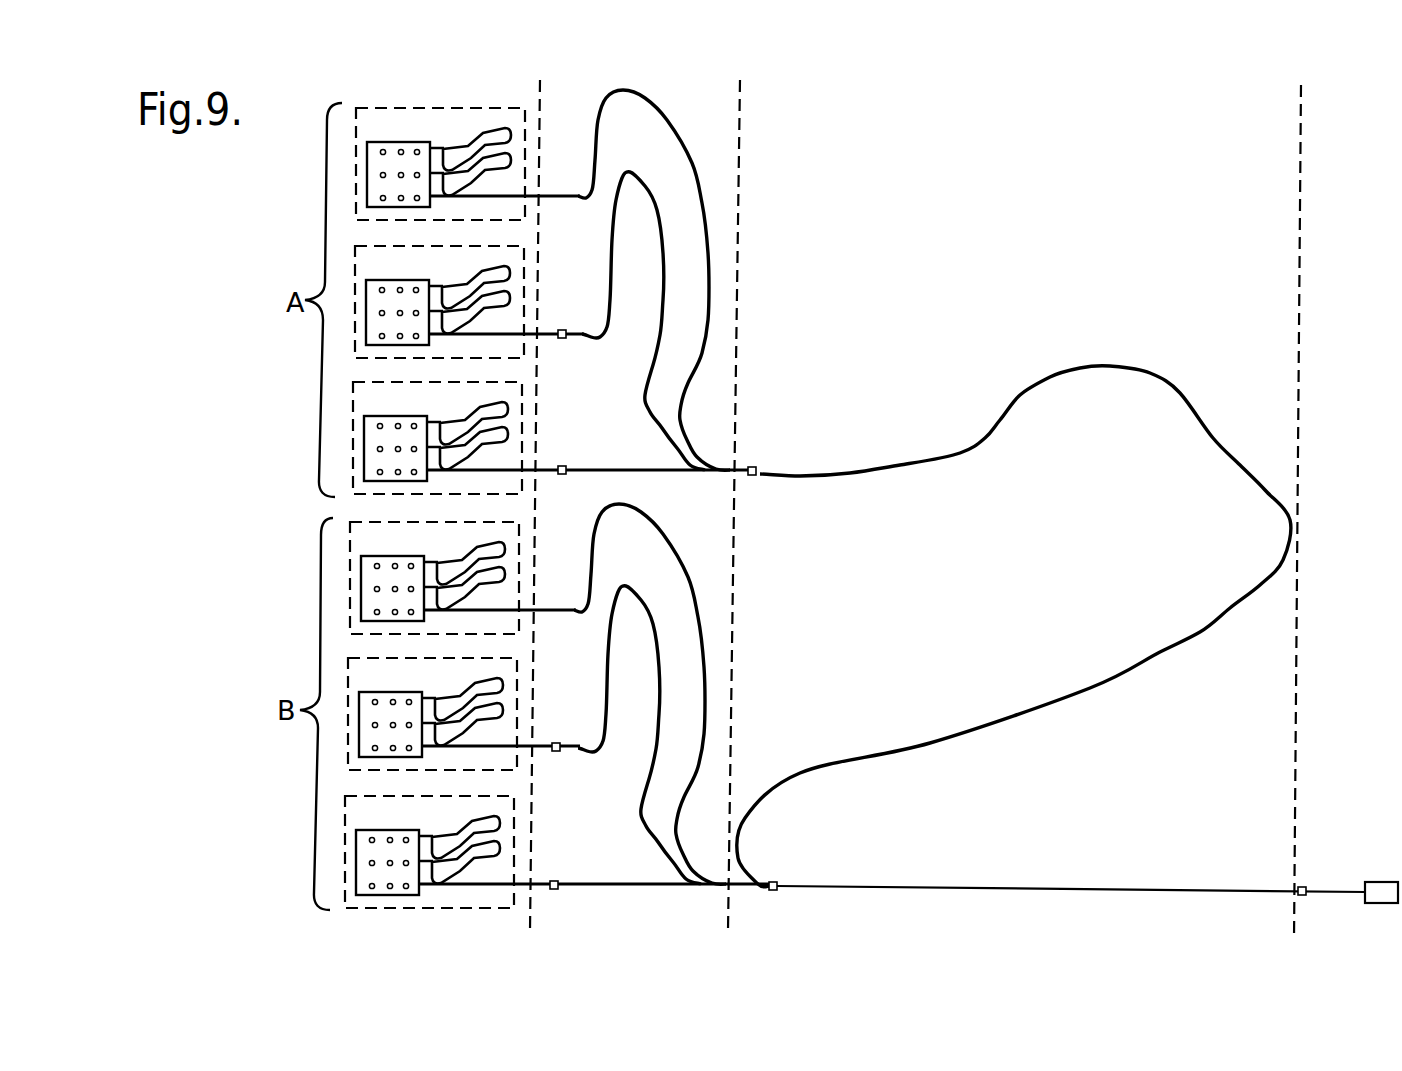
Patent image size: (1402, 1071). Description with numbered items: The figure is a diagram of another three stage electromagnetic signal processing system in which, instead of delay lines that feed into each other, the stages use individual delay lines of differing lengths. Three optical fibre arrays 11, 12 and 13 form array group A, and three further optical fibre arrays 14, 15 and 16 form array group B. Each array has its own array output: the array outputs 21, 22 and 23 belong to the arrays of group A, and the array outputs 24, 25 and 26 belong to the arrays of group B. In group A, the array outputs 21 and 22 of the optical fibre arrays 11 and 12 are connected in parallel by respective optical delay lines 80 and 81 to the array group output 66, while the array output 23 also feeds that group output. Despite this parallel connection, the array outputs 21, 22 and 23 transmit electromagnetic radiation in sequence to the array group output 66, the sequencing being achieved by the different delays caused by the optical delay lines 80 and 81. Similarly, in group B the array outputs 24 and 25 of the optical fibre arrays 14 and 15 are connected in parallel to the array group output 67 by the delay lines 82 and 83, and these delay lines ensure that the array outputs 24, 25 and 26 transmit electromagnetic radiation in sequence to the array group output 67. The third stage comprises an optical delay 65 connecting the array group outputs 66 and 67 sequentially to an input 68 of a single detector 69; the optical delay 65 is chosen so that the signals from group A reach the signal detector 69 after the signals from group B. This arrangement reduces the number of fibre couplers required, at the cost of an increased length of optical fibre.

The optical fibre array 11 is at (440, 164).
The optical fibre array 12 is at (439, 302).
The optical fibre array 13 is at (437, 438).
The optical fibre array 14 is at (434, 578).
The optical fibre array 15 is at (432, 714).
The optical fibre array 16 is at (429, 852).
The array output 21 is at (566, 199).
The array output 22 is at (552, 340).
The array output 23 is at (563, 475).
The array output 24 is at (548, 613).
The array output 25 is at (556, 752).
The array output 26 is at (553, 890).
The optical delay 65 is at (1213, 438).
The array group output 66 is at (724, 466).
The array group output 67 is at (712, 893).
The input 68 is at (1172, 890).
The detector 69 is at (1380, 905).
The optical delay line 80 is at (666, 116).
The optical delay line 81 is at (647, 407).
The delay line 82 is at (664, 532).
The delay line 83 is at (645, 833).